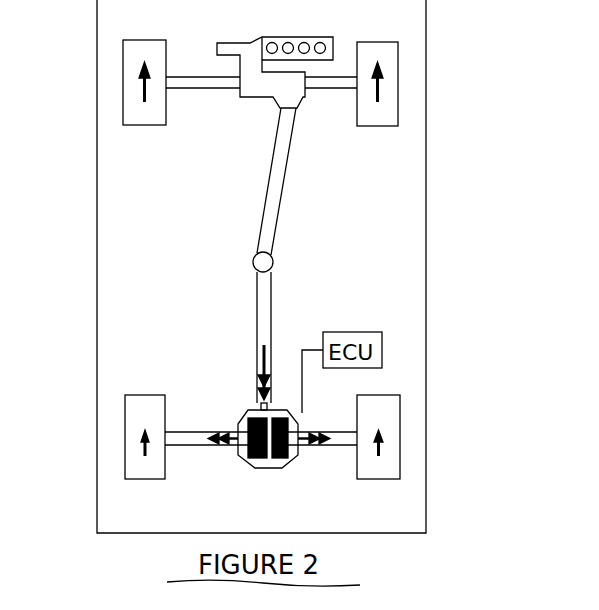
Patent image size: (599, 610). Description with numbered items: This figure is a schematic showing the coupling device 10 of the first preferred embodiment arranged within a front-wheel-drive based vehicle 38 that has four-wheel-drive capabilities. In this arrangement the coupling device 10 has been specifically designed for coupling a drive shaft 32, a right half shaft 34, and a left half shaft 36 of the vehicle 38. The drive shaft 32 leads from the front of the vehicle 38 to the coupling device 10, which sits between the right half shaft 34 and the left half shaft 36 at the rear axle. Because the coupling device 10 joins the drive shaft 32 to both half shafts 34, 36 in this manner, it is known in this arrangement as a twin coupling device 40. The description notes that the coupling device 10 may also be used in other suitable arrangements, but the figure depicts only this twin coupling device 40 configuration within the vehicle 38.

The coupling device 10 is at (302, 420).
The drive shaft 32 is at (257, 339).
The right half shaft 34 is at (328, 447).
The left half shaft 36 is at (202, 447).
The front-wheel-drive based vehicle 38 is at (418, 241).
The twin coupling device 40 is at (264, 406).